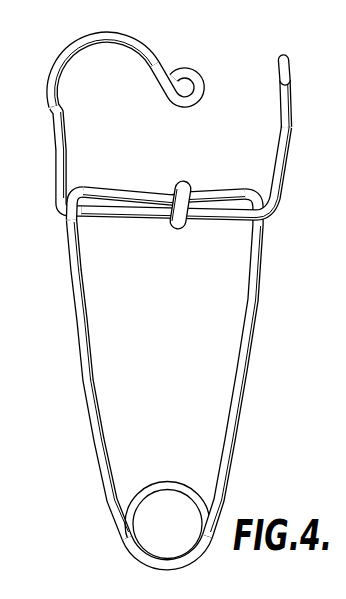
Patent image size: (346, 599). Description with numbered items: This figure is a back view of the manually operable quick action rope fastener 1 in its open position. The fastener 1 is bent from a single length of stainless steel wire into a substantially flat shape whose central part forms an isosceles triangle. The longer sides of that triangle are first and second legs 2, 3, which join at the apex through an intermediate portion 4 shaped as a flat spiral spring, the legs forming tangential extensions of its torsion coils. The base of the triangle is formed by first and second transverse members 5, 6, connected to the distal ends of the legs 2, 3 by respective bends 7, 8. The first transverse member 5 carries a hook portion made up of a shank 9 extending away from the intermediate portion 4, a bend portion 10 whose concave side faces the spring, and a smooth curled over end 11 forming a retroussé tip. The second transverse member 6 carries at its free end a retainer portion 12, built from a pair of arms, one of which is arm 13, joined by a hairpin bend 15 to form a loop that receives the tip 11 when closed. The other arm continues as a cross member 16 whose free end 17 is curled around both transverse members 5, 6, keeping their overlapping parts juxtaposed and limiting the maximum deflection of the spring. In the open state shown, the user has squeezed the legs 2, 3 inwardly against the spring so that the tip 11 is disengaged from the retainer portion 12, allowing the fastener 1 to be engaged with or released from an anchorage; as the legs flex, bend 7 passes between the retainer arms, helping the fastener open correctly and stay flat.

The quick action rope fastener 1 is at (148, 356).
The first leg 2 is at (244, 390).
The second leg 3 is at (88, 390).
The intermediate portion 4 is at (172, 486).
The first transverse member 5 is at (114, 215).
The second transverse member 6 is at (125, 188).
The bend 7 is at (243, 189).
The bend 8 is at (64, 199).
The shank 9 is at (51, 112).
The bend portion 10 is at (69, 45).
The curled over end 11 is at (197, 74).
The retainer portion 12 is at (282, 92).
The arm 13 is at (289, 158).
The hairpin bend 15 is at (286, 54).
The cross member 16 is at (197, 189).
The free end 17 is at (185, 181).